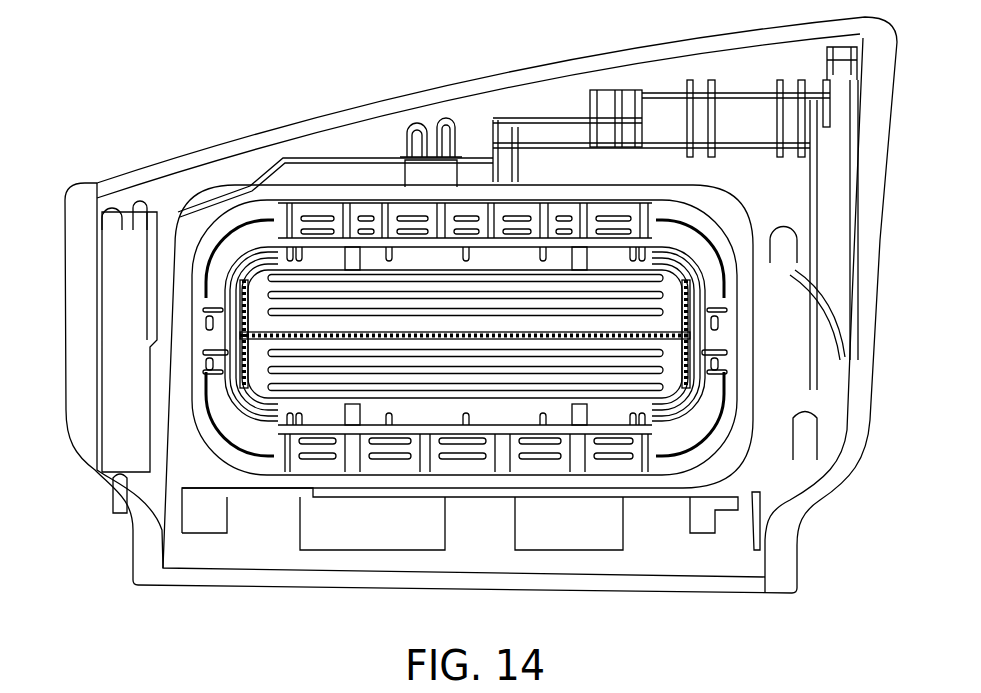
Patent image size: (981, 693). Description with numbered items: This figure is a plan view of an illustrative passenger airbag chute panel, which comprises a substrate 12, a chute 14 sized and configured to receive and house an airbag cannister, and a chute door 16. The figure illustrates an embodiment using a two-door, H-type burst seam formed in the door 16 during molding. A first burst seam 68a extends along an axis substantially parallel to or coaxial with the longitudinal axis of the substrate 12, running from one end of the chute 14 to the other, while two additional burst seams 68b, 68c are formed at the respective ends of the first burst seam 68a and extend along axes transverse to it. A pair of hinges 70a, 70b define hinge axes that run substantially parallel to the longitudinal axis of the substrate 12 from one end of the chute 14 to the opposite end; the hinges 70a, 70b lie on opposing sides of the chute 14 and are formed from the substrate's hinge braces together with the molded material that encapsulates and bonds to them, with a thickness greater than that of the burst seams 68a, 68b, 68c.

The substrate 12 is at (197, 208).
The chute 14 is at (398, 245).
The chute door 16 is at (418, 388).
The first burst seam 68a is at (483, 334).
The burst seam 68b is at (240, 363).
The burst seam 68c is at (693, 317).
The first hinge 70a is at (430, 263).
The second hinge 70b is at (505, 412).